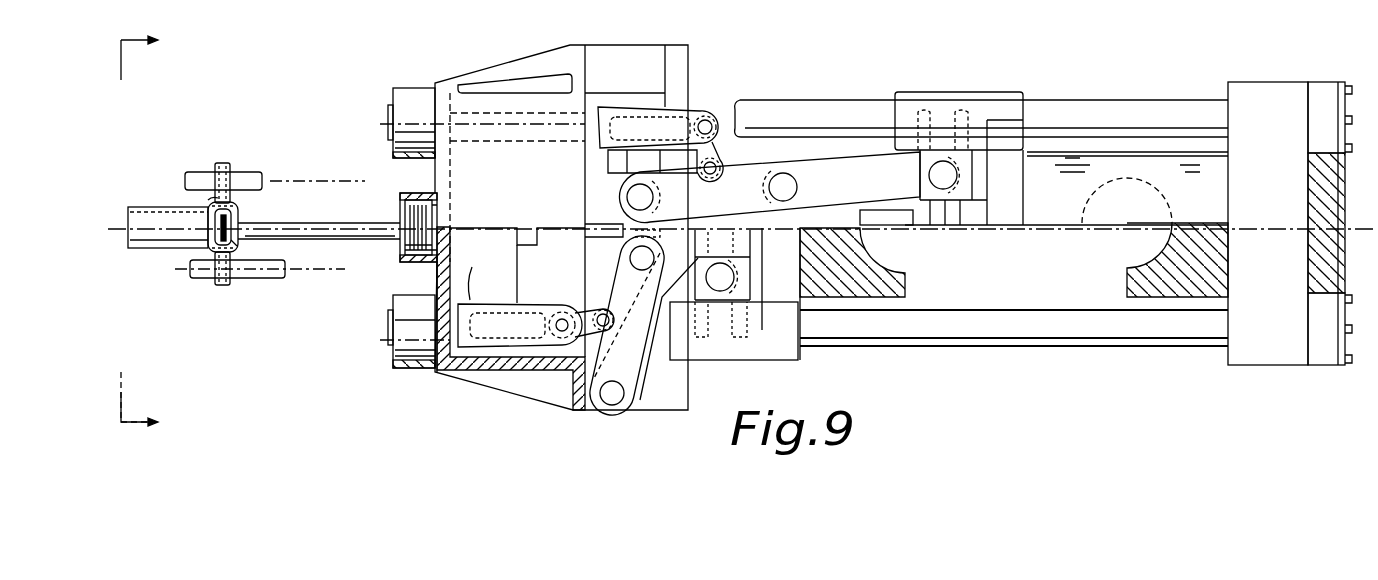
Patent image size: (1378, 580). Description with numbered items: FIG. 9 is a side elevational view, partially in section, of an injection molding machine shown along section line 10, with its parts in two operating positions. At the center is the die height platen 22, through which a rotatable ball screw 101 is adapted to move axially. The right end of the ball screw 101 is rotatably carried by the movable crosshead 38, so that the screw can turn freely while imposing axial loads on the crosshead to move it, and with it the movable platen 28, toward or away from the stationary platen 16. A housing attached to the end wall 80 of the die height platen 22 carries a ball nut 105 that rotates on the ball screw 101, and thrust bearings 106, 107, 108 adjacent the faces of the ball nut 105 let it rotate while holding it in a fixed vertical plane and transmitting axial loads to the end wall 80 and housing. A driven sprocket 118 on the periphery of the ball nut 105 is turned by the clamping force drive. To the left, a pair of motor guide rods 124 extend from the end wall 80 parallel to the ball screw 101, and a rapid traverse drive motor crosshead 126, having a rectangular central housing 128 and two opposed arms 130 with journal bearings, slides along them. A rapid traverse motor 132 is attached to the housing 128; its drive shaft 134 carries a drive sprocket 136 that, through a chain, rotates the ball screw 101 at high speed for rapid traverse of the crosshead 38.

The section line 10- 10 is at (125, 232).
The stationary platen 16 is at (1252, 93).
The die height platen 22 is at (450, 90).
The movable platen 28 is at (968, 95).
The movable crosshead 38 is at (517, 286).
The end wall 80 is at (440, 283).
The ball screw 101 is at (328, 240).
The ball nut 105 is at (430, 216).
The thrust bearing 106 is at (315, 222).
The thrust bearing 107 is at (440, 243).
The thrust bearing 108 is at (407, 247).
The driven sprocket 118 is at (400, 210).
The motor guide rods 124 is at (200, 172).
The rapid traverse drive motor crosshead 126 is at (212, 198).
The central housing 128 is at (238, 211).
The arms 130 is at (222, 163).
The rapid traverse motor 132 is at (142, 252).
The drive shaft 134 is at (207, 215).
The drive sprocket 136 is at (236, 245).